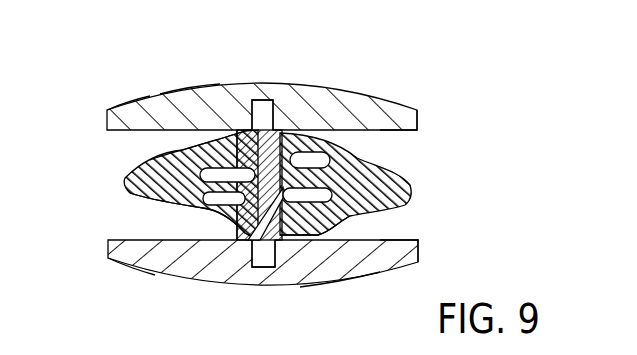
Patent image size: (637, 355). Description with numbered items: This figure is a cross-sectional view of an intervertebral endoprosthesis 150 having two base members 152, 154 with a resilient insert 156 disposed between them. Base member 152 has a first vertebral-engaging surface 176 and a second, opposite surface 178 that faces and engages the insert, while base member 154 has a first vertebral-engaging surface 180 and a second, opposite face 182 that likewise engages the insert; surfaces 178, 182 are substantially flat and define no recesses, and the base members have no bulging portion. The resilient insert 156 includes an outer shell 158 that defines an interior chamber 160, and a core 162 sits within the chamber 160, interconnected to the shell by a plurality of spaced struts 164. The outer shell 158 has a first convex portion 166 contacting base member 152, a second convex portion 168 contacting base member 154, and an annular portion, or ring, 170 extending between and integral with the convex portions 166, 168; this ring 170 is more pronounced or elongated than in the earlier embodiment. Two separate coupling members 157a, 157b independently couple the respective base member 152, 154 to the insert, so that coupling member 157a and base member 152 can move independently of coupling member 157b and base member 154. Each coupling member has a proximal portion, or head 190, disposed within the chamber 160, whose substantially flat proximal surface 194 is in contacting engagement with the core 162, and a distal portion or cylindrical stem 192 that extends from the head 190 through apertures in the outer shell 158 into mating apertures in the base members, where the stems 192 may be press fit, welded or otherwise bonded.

The intervertebral endoprosthesis 150 is at (118, 62).
The base member 152 is at (420, 106).
The base member 154 is at (426, 262).
The resilient insert 156 is at (416, 184).
The coupling member 157a is at (262, 99).
The coupling member 157b is at (259, 272).
The outer shell 158 is at (160, 210).
The interior chamber 160 is at (172, 160).
The core 162 is at (345, 218).
The spaced struts 164 is at (205, 228).
The first convex portion 166 is at (145, 97).
The second convex portion 168 is at (125, 262).
The annular portion 170 is at (123, 185).
The first vertebral-engaging surface 176 is at (195, 86).
The second surface 178 is at (417, 130).
The first vertebral-engaging surface 180 is at (340, 280).
The second face 182 is at (415, 240).
The head 190 is at (298, 132).
The stem 192 is at (249, 118).
The proximal surface 194 is at (332, 158).